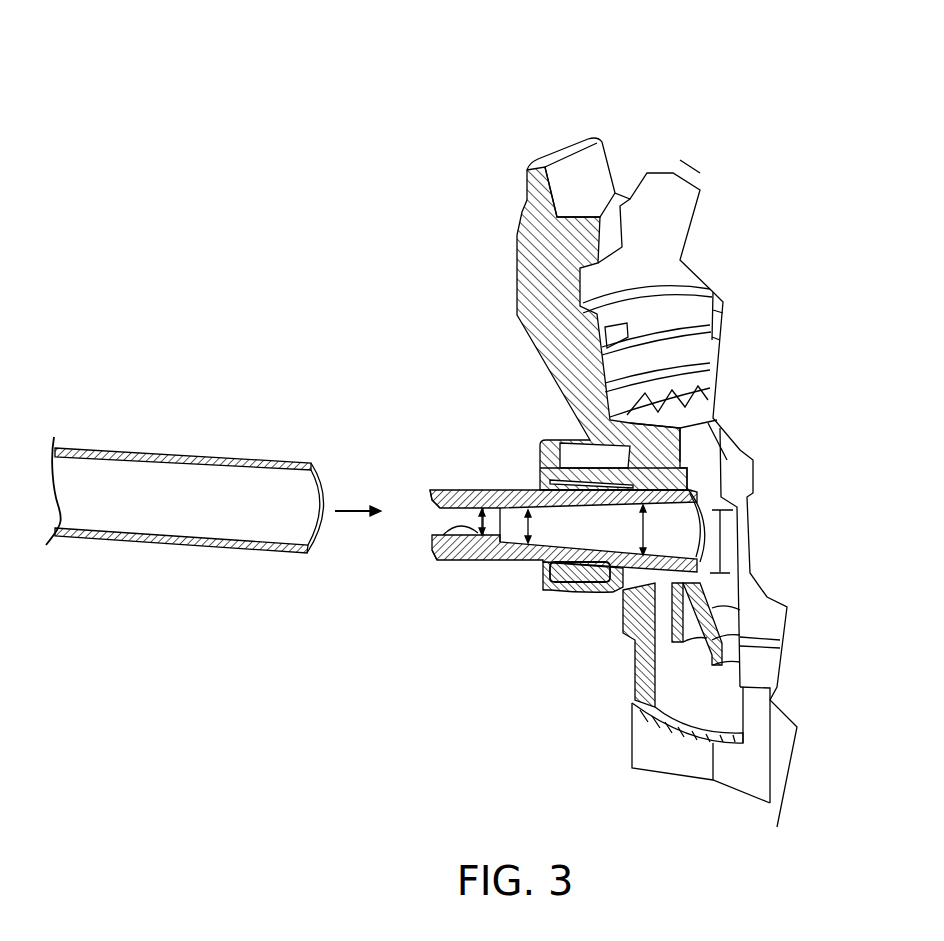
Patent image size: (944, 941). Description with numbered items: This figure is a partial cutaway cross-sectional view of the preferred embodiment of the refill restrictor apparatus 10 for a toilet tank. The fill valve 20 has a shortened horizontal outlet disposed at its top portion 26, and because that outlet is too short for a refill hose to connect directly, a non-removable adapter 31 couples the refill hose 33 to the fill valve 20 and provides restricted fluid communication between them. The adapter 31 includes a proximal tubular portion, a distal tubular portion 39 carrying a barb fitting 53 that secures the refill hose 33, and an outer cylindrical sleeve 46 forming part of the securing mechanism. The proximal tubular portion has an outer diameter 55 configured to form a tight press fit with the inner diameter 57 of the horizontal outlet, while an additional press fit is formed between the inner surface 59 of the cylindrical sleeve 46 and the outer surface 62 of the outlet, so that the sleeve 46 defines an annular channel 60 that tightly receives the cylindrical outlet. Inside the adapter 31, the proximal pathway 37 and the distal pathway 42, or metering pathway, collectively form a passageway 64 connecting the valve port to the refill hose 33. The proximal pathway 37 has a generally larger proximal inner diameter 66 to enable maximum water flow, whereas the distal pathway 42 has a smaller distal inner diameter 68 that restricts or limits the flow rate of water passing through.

The refill restrictor apparatus 10 is at (465, 50).
The fill valve 20 is at (665, 112).
The top portion 26 is at (455, 312).
The adapter 31 is at (603, 537).
The refill hose 33 is at (202, 549).
The proximal pathway 37 is at (603, 581).
The distal tubular portion 39 is at (489, 561).
The distal pathway 42 is at (458, 536).
The outer cylindrical sleeve 46 is at (573, 466).
The barb fitting 53 is at (449, 491).
The outer diameter 55 is at (723, 537).
The inner diameter 57 is at (641, 537).
The inner surface 59 is at (543, 479).
The annular channel 60 is at (544, 581).
The outer surface 62 is at (576, 583).
The passageway 64 is at (428, 518).
The proximal inner diameter 66 is at (515, 546).
The distal inner diameter 68 is at (436, 547).